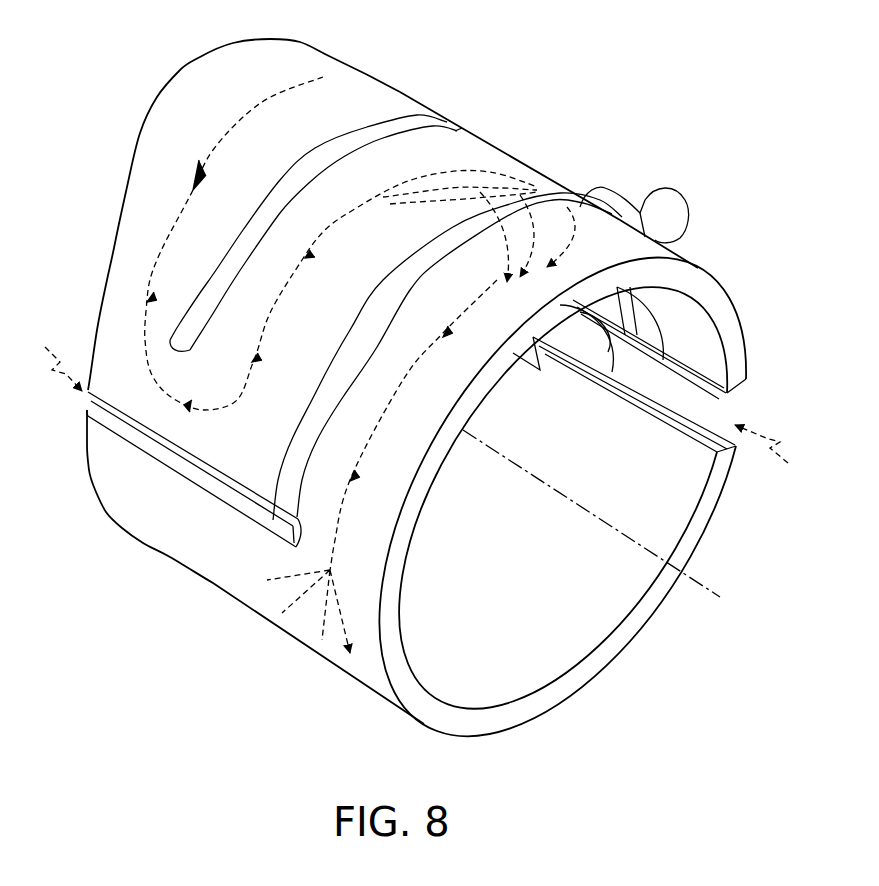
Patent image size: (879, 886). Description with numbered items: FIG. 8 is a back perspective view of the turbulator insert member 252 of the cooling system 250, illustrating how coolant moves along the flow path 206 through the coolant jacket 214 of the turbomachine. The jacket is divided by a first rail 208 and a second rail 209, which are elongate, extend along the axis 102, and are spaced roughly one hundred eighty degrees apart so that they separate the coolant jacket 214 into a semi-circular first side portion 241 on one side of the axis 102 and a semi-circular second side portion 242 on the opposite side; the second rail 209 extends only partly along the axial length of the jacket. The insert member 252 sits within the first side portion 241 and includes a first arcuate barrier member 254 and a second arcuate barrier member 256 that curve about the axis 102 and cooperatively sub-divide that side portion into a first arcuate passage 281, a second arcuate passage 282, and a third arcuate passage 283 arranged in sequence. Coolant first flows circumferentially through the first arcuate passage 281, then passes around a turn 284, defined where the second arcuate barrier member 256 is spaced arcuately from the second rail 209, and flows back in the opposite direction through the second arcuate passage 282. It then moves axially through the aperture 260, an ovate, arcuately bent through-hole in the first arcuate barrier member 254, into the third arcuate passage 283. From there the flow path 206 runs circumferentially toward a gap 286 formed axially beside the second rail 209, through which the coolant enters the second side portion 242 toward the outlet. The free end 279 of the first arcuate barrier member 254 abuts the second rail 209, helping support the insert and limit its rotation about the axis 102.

The axis 102 is at (720, 597).
The flow path 206 is at (266, 97).
The first rail 208 is at (783, 459).
The second rail 209 is at (46, 355).
The coolant jacket 214 is at (390, 99).
The first side portion 241 is at (465, 370).
The second side portion 242 is at (547, 660).
The cooling system 250 is at (580, 133).
The turbulator insert member 252 is at (428, 116).
The first arcuate barrier member 254 is at (371, 302).
The second arcuate barrier member 256 is at (310, 173).
The aperture 260 is at (540, 200).
The free end 279 is at (281, 522).
The first arcuate passage 281 is at (179, 88).
The second arcuate passage 282 is at (457, 150).
The third arcuate passage 283 is at (617, 250).
The turn 284 is at (161, 426).
The gap 286 is at (380, 542).